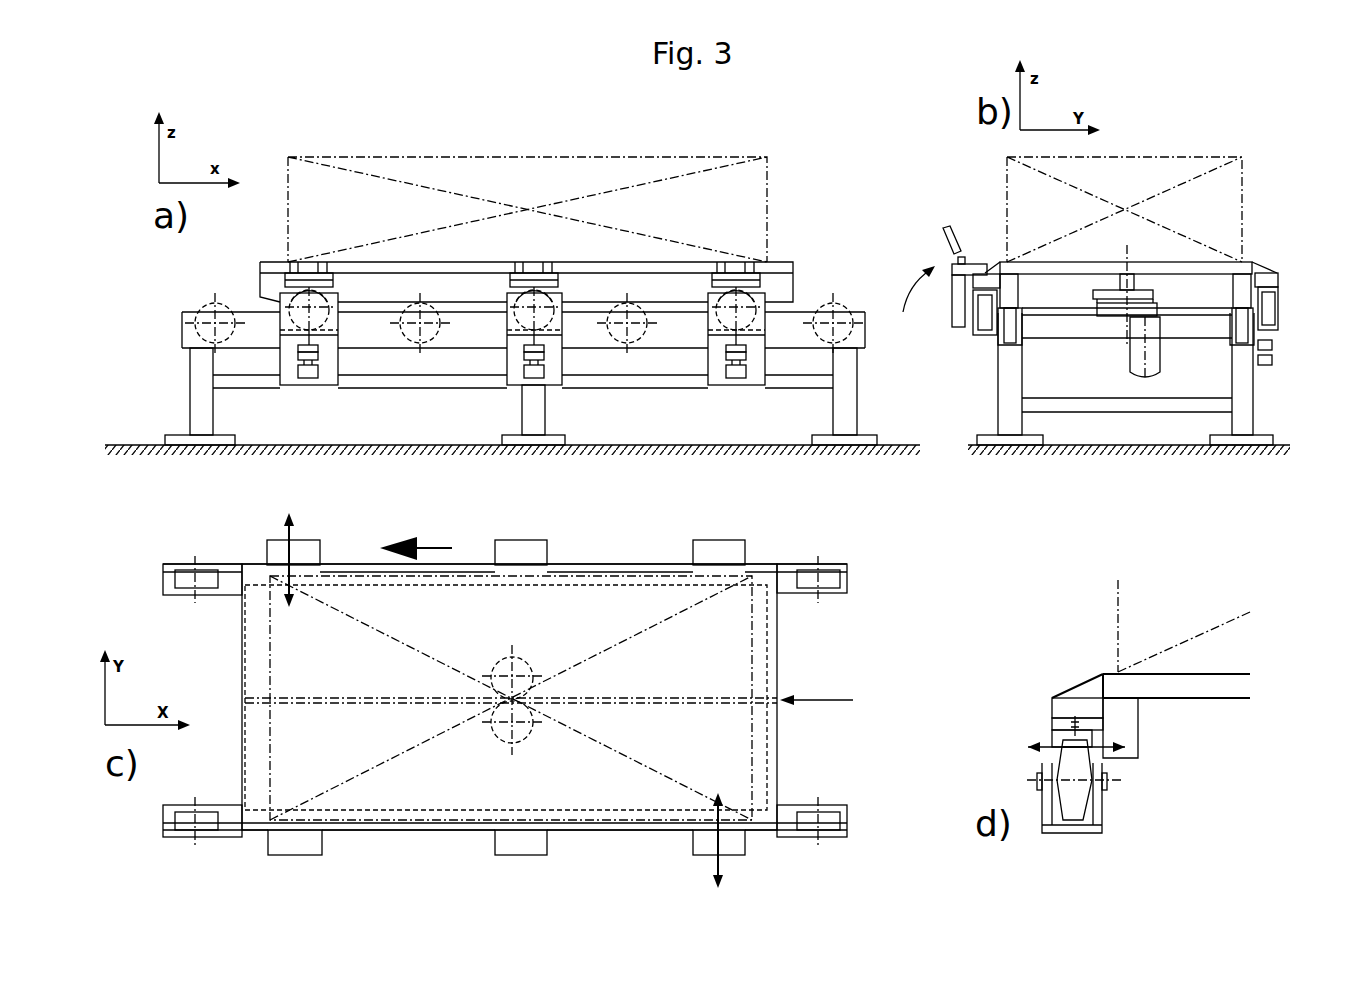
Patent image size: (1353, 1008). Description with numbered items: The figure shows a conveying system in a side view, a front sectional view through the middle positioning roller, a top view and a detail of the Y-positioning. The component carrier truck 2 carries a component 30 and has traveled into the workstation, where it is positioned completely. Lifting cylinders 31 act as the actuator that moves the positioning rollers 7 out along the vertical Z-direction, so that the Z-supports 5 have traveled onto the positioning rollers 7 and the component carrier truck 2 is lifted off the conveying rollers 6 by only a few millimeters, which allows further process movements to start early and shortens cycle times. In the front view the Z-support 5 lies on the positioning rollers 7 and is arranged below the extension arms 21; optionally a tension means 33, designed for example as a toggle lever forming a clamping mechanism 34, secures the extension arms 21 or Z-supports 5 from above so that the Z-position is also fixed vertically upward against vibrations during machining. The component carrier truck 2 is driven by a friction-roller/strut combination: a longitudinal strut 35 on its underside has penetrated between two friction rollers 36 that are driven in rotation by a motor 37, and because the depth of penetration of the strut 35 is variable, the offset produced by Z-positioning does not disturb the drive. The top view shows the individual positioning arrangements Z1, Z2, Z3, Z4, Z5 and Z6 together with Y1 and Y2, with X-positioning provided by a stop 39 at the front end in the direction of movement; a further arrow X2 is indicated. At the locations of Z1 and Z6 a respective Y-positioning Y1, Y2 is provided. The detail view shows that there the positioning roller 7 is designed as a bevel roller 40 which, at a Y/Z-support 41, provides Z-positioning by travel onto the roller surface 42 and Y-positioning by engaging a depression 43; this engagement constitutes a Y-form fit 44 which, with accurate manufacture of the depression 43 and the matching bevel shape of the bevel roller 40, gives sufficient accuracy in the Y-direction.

In FIG. 3a, the component carrier truck 2 is at (780, 262).
In FIG. 3b, the component carrier truck 2 is at (1245, 268).
In FIG. 3c, the component carrier truck 2 is at (778, 632).
In FIG. 3d, the component carrier truck 2 is at (1224, 688).
In FIG. 3a, the Z-support 5 is at (333, 283).
In FIG. 3b, the Z-support 5 is at (976, 287).
In FIG. 3a, the conveying roller 6 is at (212, 304).
In FIG. 3b, the conveying roller 6 is at (1012, 347).
In FIG. 3a, the positioning roller 7 is at (326, 318).
In FIG. 3b, the positioning roller 7 is at (982, 316).
In FIG. 3b, the extension arm 21 is at (1278, 280).
In FIG. 3d, the extension arm 21 is at (1059, 706).
In FIG. 3a, the component 30 is at (430, 157).
In FIG. 3b, the component 30 is at (1140, 157).
In FIG. 3a, the lifting cylinder 31 is at (330, 378).
In FIG. 3b, the tension means 33 is at (916, 306).
In FIG. 3b, the clamping mechanism 34 is at (948, 237).
In FIG. 3b, the longitudinal strut 35 is at (1120, 281).
In FIG. 3c, the longitudinal strut 35 is at (648, 704).
In FIG. 3b, the friction roller 36 is at (1153, 295).
In FIG. 3c, the friction roller 36 is at (519, 744).
In FIG. 3b, the motor 37 is at (1157, 359).
In FIG. 3c, the stop 39 is at (838, 703).
In FIG. 3d, the bevel roller 40 is at (1078, 800).
In FIG. 3d, the Y/Z-support 41 is at (1052, 738).
In FIG. 3d, the roller surface 42 is at (1073, 832).
In FIG. 3d, the depression 43 is at (1075, 728).
In FIG. 3d, the Y-form fit 44 is at (1110, 762).
In FIG. 3c, the positioning location Z1 is at (302, 555).
In FIG. 3c, the positioning location Z2 is at (307, 843).
In FIG. 3c, the positioning location Z3 is at (525, 556).
In FIG. 3c, the positioning location Z4 is at (522, 845).
In FIG. 3c, the positioning location Z5 is at (725, 556).
In FIG. 3c, the positioning location Z6 is at (735, 845).
In FIG. 3c, the actuator X2 is at (416, 543).
In FIG. 3c, the Y-positioning Y1 is at (277, 555).
In FIG. 3c, the Y-positioning Y2 is at (701, 840).